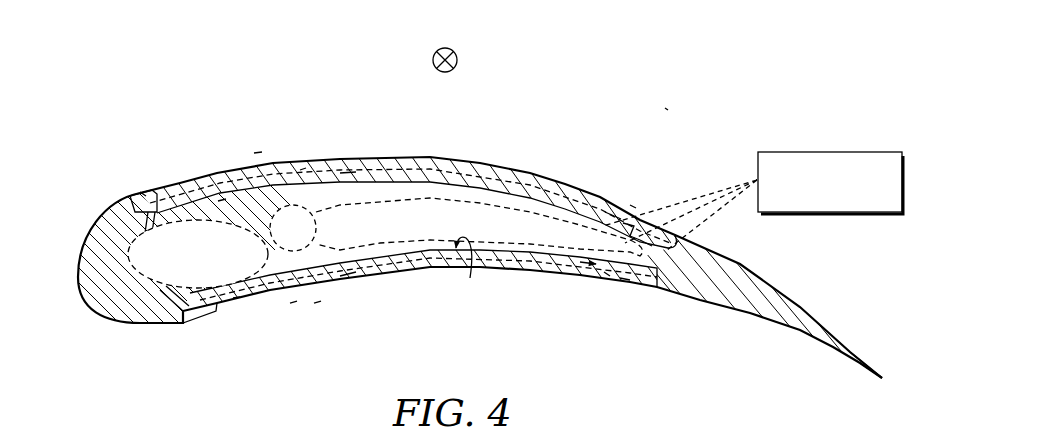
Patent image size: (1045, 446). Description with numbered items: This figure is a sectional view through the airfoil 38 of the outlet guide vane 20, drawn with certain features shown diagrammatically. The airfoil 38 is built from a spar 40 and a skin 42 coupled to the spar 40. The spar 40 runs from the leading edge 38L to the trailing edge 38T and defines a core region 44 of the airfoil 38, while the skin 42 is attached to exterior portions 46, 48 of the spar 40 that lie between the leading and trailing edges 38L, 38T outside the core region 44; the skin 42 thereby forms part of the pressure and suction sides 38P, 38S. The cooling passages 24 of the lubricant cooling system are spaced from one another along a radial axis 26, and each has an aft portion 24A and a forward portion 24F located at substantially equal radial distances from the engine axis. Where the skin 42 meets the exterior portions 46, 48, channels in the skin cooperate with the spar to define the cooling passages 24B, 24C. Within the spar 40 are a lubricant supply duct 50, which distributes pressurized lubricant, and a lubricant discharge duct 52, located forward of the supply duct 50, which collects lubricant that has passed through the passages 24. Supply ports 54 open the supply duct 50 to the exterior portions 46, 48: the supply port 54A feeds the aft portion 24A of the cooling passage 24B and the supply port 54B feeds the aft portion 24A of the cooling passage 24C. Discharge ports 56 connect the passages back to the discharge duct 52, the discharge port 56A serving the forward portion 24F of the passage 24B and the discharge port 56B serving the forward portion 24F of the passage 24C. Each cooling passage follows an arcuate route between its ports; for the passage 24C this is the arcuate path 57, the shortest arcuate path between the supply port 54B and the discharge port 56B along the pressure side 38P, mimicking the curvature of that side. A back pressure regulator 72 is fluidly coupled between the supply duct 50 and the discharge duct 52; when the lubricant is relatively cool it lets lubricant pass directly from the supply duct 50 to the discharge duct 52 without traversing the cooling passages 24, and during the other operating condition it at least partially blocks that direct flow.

The outlet guide vane 20 is at (670, 110).
The cooling passages 24 is at (832, 152).
The aft portion 24A is at (634, 206).
The cooling passage 24B is at (538, 179).
The cooling passage 24C is at (533, 278).
The forward portion 24F is at (143, 191).
The radial axis 26 is at (458, 57).
The airfoil 38 is at (491, 241).
The leading edge 38L is at (84, 226).
The trailing edge 38T is at (859, 370).
The suction side 38S is at (335, 157).
The pressure side 38P is at (333, 302).
The spar 40 is at (496, 208).
The skin 42 is at (258, 152).
The core region 44 is at (304, 168).
The exterior portion 46 is at (440, 186).
The exterior portion 48 is at (470, 278).
The lubricant supply duct 50 is at (580, 229).
The lubricant discharge duct 52 is at (222, 200).
The supply ports 54 is at (713, 237).
The supply port 54A is at (654, 246).
The supply port 54B is at (625, 283).
The discharge ports 56 is at (157, 248).
The discharge port 56A is at (185, 178).
The discharge port 56B is at (162, 304).
The arcuate path 57 is at (317, 302).
The back pressure regulator 72 is at (313, 210).